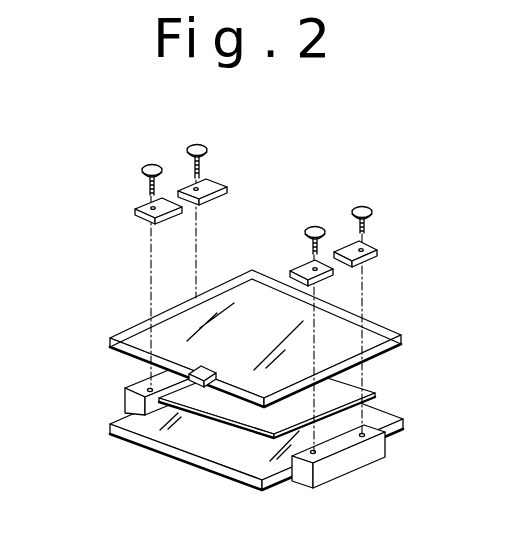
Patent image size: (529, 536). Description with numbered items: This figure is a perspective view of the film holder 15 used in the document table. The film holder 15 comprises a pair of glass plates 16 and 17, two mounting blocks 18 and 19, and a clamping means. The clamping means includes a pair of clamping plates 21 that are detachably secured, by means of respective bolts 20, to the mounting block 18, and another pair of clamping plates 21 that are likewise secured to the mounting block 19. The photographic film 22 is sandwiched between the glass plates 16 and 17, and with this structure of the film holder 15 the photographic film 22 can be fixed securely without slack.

The film holder 15 is at (91, 288).
The glass plate 16 is at (401, 335).
The glass plate 17 is at (404, 419).
The mounting block 18 is at (363, 463).
The mounting block 19 is at (125, 403).
The bolts 20 is at (200, 146).
The clamping plates 21 is at (172, 210).
The photographic film 22 is at (375, 393).